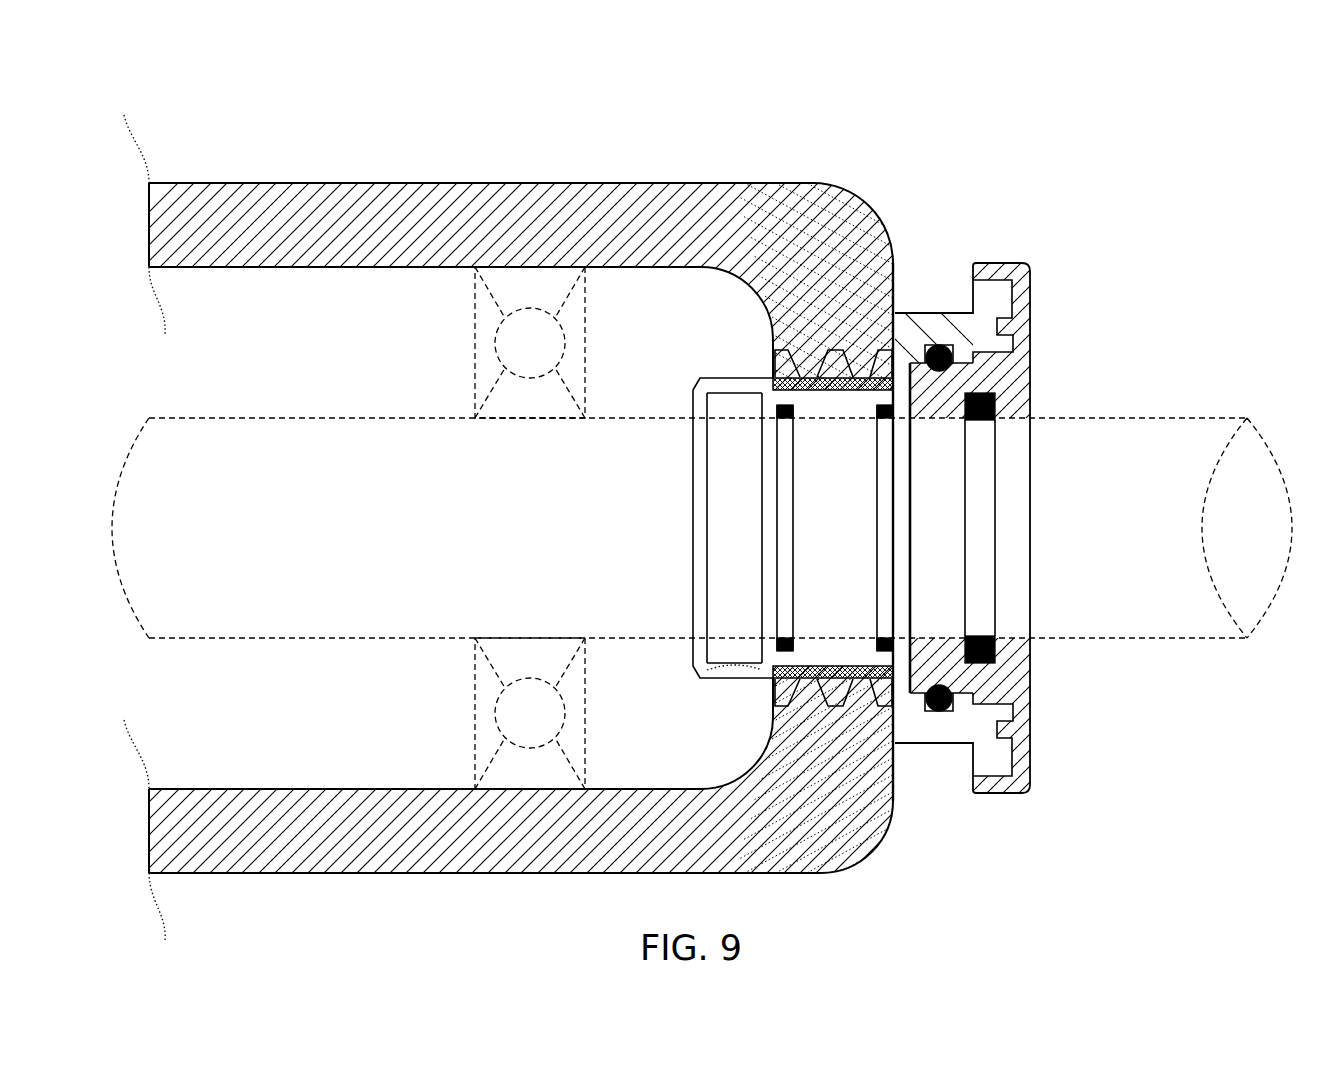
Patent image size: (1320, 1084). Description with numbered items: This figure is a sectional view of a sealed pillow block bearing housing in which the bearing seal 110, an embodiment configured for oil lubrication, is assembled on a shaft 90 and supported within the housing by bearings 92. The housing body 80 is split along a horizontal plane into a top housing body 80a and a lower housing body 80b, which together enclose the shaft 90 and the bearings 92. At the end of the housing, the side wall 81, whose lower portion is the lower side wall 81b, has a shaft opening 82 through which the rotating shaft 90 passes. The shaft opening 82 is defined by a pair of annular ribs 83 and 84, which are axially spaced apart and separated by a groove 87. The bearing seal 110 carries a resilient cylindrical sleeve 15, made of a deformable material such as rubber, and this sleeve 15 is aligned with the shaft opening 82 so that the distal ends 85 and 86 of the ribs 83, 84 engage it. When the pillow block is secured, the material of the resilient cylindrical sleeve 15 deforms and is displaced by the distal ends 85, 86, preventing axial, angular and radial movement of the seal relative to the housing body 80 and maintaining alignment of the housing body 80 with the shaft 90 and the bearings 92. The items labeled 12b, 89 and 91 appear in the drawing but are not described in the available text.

The housing body 80 is at (660, 542).
The top housing body 80a is at (258, 212).
The lower housing body 80b is at (223, 833).
The side wall 81 is at (835, 300).
The lower side wall 81b is at (795, 305).
The shaft opening 82 is at (752, 696).
The annular rib 83 is at (775, 365).
The annular rib 84 is at (880, 468).
The distal end 85 is at (813, 420).
The distal end 86 is at (905, 468).
The groove 87 is at (862, 348).
The cap 89 is at (898, 312).
The shaft 90 is at (284, 575).
The shaft 91 is at (1147, 533).
The bearings 92 is at (538, 343).
The sleeve 12b is at (679, 555).
The resilient cylindrical sleeve 15 is at (725, 428).
The bearing seal 110 is at (830, 438).